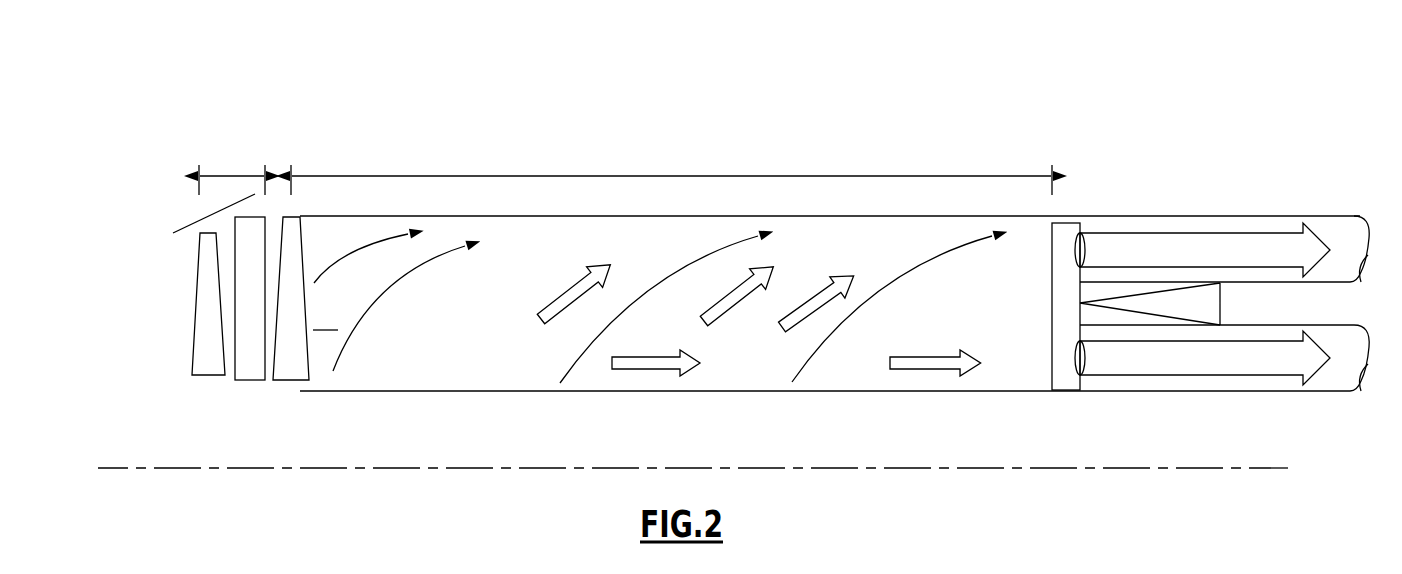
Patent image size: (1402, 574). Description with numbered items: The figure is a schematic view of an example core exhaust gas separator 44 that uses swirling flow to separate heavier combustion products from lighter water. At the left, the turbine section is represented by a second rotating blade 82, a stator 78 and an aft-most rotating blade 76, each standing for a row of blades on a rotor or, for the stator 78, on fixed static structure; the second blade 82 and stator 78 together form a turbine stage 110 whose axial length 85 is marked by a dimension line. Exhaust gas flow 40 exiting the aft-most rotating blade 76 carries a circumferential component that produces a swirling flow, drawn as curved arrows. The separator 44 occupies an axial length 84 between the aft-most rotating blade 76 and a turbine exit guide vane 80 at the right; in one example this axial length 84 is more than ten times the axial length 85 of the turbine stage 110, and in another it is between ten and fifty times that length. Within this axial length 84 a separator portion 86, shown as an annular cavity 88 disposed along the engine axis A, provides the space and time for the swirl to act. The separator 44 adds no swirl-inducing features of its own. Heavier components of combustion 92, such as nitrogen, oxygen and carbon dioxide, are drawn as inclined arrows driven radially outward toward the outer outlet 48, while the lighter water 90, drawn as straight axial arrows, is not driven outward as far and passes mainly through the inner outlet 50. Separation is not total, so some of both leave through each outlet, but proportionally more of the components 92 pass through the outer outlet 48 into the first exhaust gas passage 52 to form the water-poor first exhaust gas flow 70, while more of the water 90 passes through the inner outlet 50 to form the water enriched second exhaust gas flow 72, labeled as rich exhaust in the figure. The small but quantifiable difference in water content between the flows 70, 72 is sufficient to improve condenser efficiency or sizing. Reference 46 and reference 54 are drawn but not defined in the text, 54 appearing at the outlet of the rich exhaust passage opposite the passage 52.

The separator 44 is at (1106, 89).
The exhaust gas flow 40 is at (410, 270).
The inner flow boundary 46 is at (320, 373).
The outer outlet 48 is at (1079, 250).
The inner outlet 50 is at (1080, 360).
The first exhaust gas passage 52 is at (1266, 213).
The H2O rich exhaust outlet 54 is at (1266, 395).
The first exhaust gas flow 70 is at (1153, 232).
The second exhaust gas flow 72 is at (1153, 377).
The aft-most rotating turbine blade 76 is at (295, 372).
The stator 78 is at (248, 372).
The turbine exit guide vane (TEGV) 80 is at (1065, 357).
The second rotating blade 82 is at (200, 360).
The axial length 84 is at (400, 172).
The axial length of turbine stage 85 is at (233, 172).
The separator portion 86 is at (527, 363).
The annular cavity 88 is at (535, 259).
The water 90 is at (638, 360).
The components of combustion 92 is at (547, 312).
The turbine stage 110 is at (212, 210).
The engine axis A is at (546, 470).